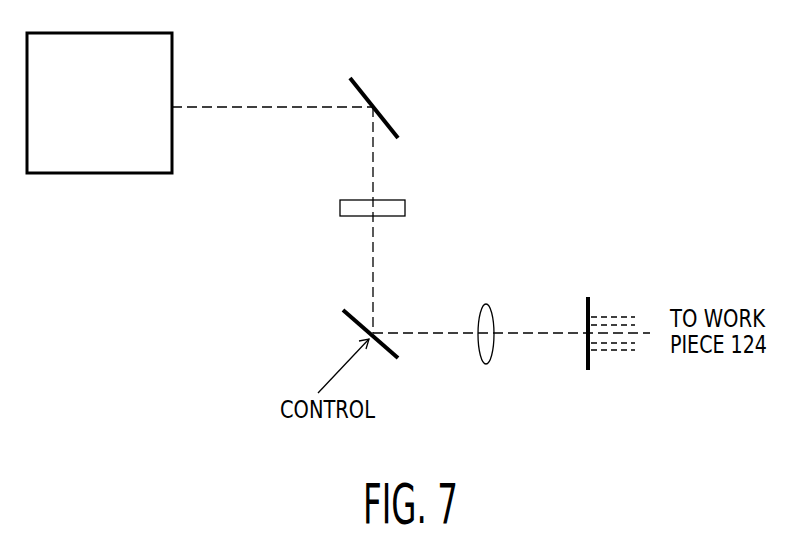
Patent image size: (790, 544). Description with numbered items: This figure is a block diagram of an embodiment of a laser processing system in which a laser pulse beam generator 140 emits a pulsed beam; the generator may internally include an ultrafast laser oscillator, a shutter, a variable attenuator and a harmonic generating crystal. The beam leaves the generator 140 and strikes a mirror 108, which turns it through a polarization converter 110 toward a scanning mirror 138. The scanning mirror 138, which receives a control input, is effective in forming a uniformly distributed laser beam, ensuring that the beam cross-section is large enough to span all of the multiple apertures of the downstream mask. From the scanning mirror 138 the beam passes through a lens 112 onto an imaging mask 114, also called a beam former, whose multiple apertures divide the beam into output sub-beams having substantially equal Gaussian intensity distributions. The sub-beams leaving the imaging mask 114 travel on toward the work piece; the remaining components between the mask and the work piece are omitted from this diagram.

The laser pulse beam generator 140 is at (172, 45).
The mirror 108 is at (383, 109).
The polarization converter 110 is at (405, 208).
The scanning mirror 138 is at (356, 326).
The lens 112 is at (488, 304).
The imaging mask 114 is at (588, 297).